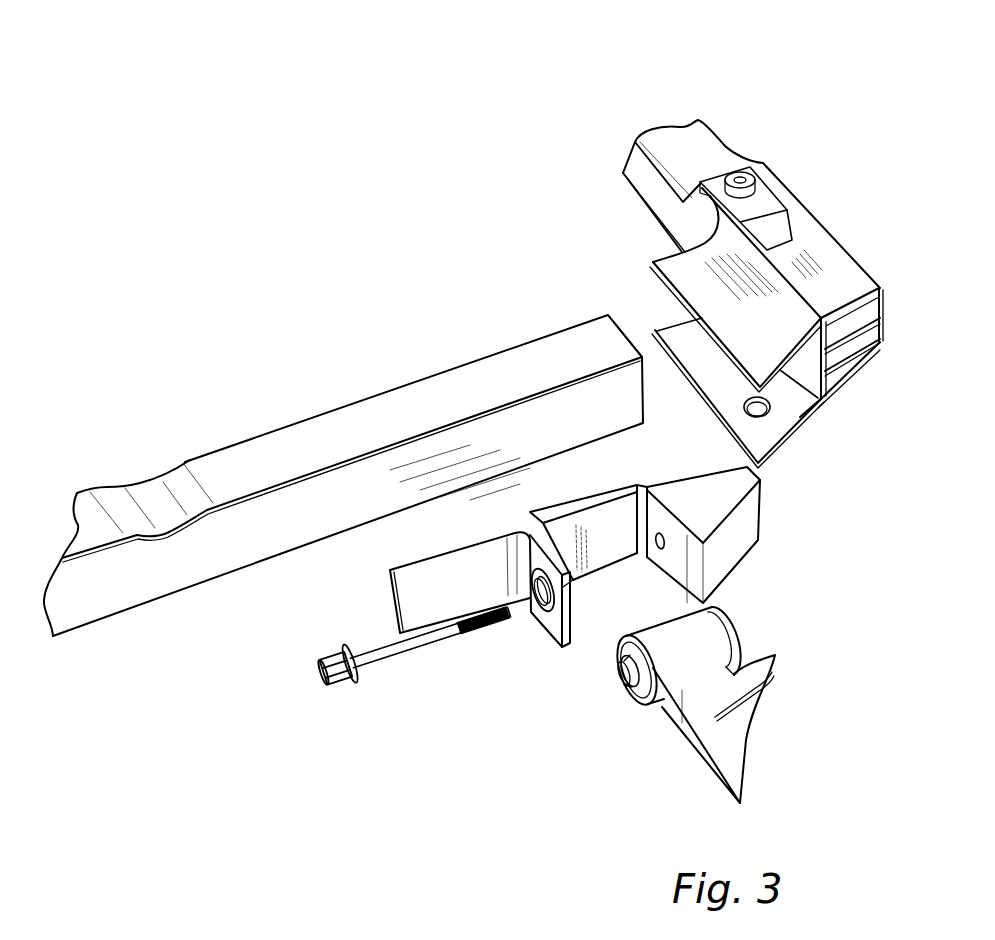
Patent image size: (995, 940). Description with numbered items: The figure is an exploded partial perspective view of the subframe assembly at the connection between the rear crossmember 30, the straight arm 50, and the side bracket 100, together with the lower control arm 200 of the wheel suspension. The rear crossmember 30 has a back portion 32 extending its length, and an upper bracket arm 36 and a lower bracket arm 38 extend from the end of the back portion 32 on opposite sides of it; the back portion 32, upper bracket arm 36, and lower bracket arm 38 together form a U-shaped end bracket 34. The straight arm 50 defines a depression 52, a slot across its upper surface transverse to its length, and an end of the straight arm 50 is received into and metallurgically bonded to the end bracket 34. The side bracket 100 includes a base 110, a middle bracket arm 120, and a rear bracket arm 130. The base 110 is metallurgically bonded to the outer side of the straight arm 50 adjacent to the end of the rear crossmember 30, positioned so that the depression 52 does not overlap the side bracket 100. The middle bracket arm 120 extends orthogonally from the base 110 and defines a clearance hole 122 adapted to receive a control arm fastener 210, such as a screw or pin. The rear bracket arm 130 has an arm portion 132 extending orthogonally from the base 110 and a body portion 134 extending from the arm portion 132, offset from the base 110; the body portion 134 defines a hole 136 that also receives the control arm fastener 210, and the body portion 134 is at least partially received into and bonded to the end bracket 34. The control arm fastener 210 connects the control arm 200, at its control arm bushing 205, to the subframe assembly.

The rear crossmember 30 is at (664, 92).
The back portion 32 is at (655, 192).
The end bracket 34 is at (647, 289).
The upper bracket arm 36 is at (777, 312).
The lower bracket arm 38 is at (693, 357).
The straight arm 50 is at (345, 420).
The depression 52 is at (158, 510).
The side bracket 100 is at (503, 641).
The base 110 is at (410, 585).
The middle bracket arm 120 is at (560, 633).
The threaded hole 122 is at (540, 603).
The rear bracket arm 130 is at (792, 475).
The arm portion 132 is at (667, 473).
The body portion 134 is at (745, 523).
The hole 136 is at (660, 533).
The lower control arm 200 is at (655, 757).
The control arm bushing 205 is at (690, 640).
The control arm fastener 210 is at (380, 652).